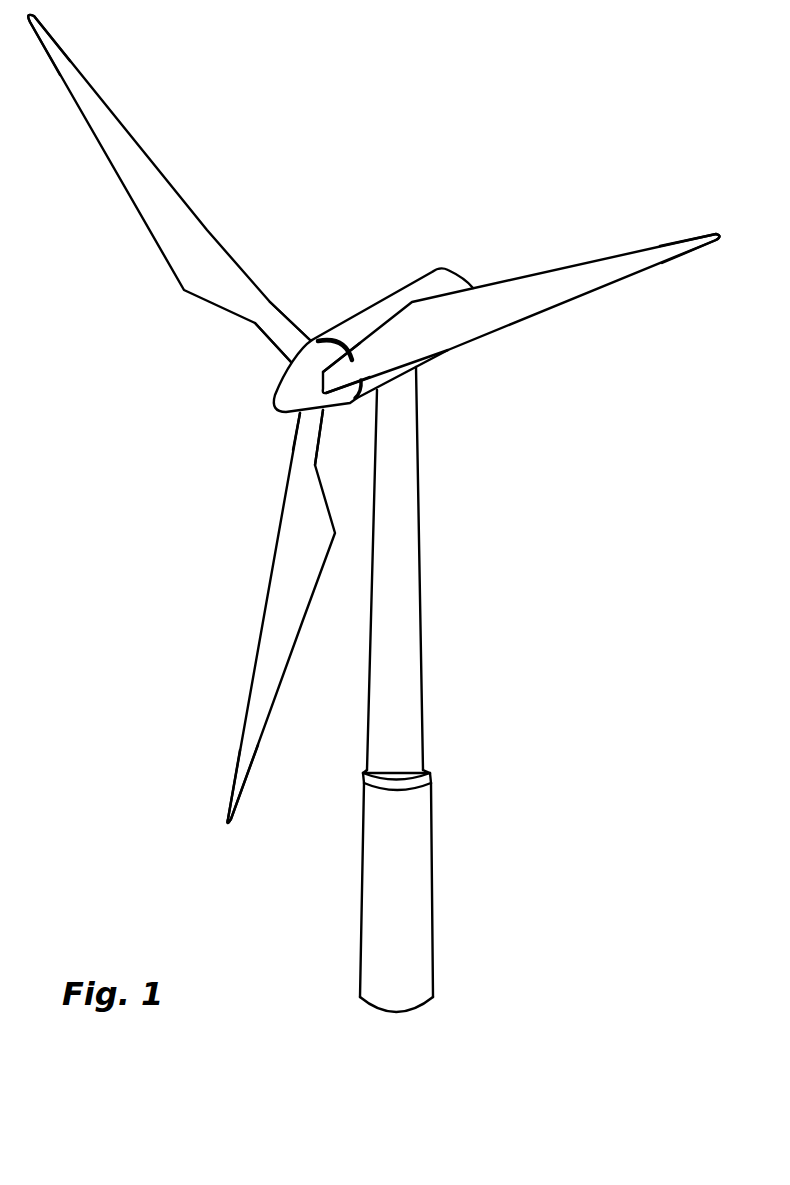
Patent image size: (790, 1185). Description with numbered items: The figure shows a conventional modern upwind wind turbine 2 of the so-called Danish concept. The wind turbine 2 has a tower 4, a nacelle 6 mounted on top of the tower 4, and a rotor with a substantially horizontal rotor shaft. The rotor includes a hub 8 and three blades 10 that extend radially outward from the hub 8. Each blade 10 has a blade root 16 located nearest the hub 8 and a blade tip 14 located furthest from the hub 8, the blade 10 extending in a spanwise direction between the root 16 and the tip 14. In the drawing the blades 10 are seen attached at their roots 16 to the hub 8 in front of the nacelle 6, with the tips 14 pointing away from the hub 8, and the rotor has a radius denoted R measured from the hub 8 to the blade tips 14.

The wind turbine 2 is at (512, 637).
The tower 4 is at (412, 572).
The nacelle 6 is at (362, 317).
The hub 8 is at (288, 394).
The blade 10 is at (193, 265).
The blade tip 14 is at (64, 62).
The blade root 16 is at (290, 356).